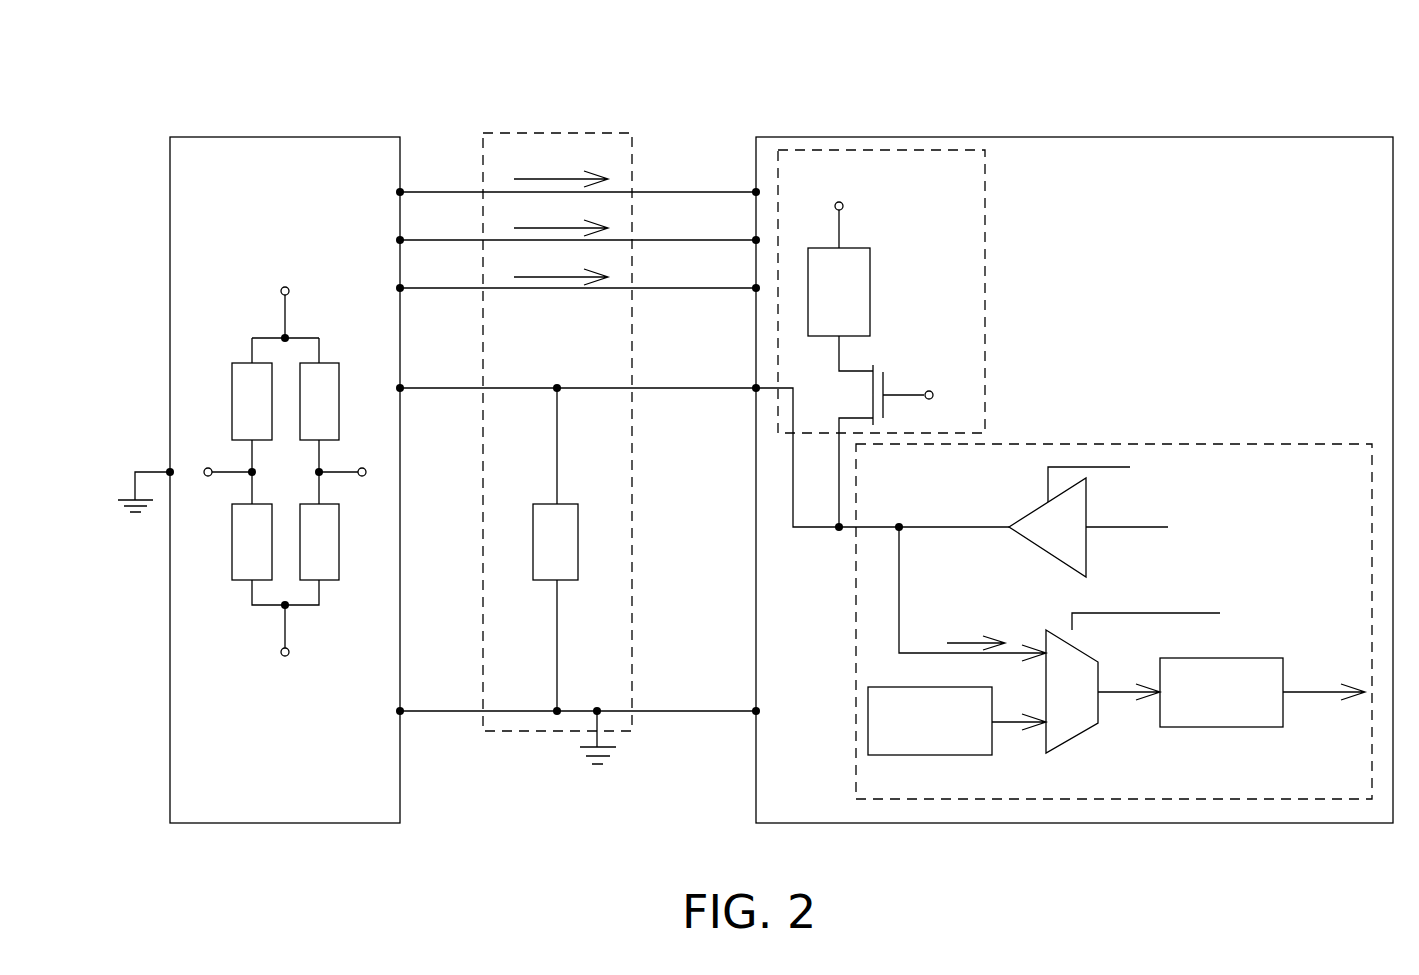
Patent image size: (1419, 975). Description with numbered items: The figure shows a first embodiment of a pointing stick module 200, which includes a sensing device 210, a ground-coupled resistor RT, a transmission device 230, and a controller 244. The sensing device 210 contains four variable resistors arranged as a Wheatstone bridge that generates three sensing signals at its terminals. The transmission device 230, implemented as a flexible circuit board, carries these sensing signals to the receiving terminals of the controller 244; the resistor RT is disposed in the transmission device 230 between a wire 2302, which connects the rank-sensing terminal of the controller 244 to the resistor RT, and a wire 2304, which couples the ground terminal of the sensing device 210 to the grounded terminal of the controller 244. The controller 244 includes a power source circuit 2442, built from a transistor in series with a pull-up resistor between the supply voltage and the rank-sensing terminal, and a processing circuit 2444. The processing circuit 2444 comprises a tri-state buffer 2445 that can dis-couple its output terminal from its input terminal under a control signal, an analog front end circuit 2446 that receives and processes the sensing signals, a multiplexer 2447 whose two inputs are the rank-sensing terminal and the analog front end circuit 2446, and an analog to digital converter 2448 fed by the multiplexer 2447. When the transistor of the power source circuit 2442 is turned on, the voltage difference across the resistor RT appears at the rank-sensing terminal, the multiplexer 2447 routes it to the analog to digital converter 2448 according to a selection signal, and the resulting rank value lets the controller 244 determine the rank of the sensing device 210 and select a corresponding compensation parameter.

The pointing stick module 200 is at (1200, 103).
The sensing device 210 is at (280, 137).
The transmission device 230 is at (557, 133).
The wire 2302 is at (523, 388).
The wire 2304 is at (519, 711).
The controller 244 is at (1095, 137).
The power source circuit 2442 is at (985, 293).
The processing circuit 2444 is at (1233, 444).
The tri-state buffer 2445 is at (1048, 563).
The analog front end circuit 2446 is at (930, 755).
The multiplexer 2447 is at (1075, 750).
The analog to digital converter 2448 is at (1220, 727).